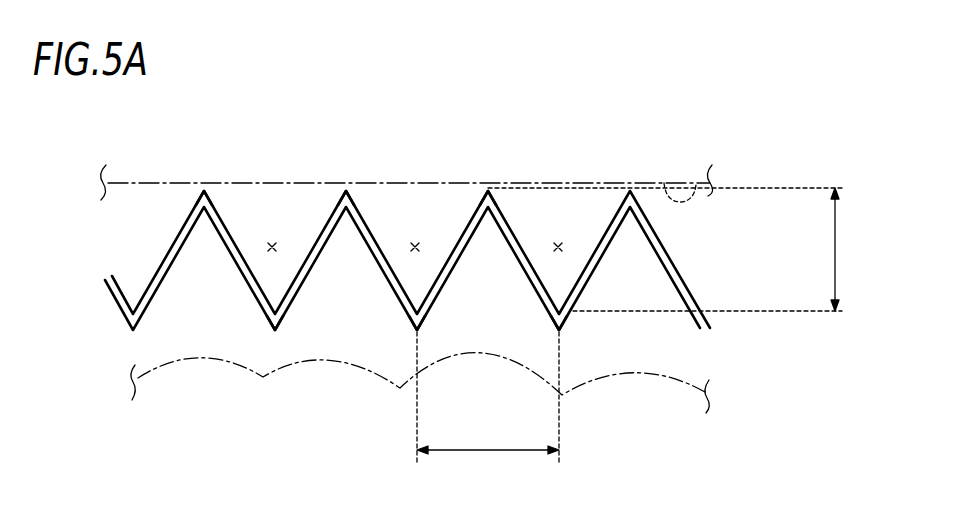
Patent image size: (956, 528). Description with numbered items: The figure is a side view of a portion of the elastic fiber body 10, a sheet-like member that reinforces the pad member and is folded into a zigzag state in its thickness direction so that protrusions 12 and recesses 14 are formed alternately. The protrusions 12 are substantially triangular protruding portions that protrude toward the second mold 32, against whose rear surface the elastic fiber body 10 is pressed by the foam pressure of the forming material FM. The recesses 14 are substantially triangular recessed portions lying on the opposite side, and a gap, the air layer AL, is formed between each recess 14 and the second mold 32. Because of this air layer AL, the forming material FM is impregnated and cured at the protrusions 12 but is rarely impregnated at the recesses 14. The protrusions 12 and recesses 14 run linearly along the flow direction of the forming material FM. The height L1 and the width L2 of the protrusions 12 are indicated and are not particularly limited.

The elastic fiber body 10 is at (666, 252).
The protrusions 12 is at (204, 191).
The recesses 14 is at (277, 327).
The second mold 32 is at (667, 185).
The air layer AL is at (272, 243).
The forming material FM is at (653, 392).
The height of the protrusions L1 is at (678, 249).
The width of the protrusions L2 is at (488, 409).